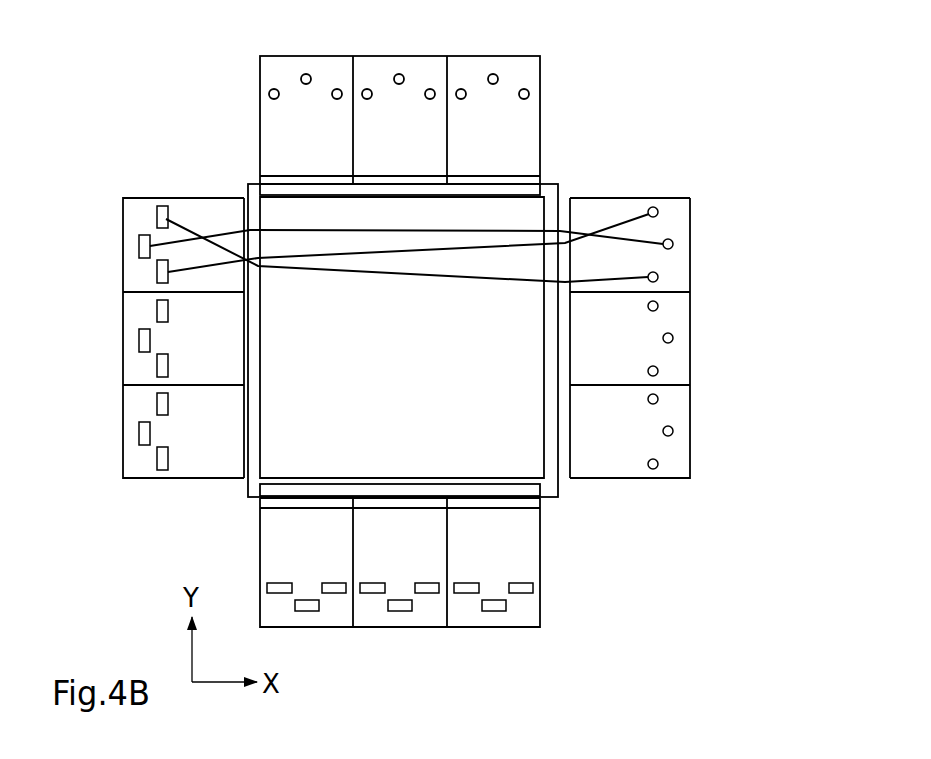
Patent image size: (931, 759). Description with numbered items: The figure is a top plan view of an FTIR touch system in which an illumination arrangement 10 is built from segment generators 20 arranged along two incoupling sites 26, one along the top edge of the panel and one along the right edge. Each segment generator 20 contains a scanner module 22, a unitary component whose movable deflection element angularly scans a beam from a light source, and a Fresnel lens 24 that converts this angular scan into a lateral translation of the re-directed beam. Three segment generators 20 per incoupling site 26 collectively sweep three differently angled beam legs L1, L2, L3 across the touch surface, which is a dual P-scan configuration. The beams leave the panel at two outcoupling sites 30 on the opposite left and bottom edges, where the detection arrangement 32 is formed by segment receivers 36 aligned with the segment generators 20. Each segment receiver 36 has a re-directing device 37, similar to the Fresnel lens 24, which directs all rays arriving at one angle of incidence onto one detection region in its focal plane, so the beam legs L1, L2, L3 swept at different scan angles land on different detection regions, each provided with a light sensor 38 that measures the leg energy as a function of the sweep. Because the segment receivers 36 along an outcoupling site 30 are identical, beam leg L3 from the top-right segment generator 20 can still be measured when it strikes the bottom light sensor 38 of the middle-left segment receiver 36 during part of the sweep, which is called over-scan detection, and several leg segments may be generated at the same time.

The illumination arrangement 10 is at (678, 155).
The segment generator 20 is at (467, 264).
The scanner module 22 is at (658, 463).
The Fresnel lens 24 is at (302, 180).
The incoupling site 26 is at (533, 188).
The outcoupling site 30 is at (253, 205).
The detection arrangement 32 is at (334, 421).
The segment receiver 36 is at (334, 421).
The re-directing device 37 is at (245, 212).
The light sensor 38 is at (160, 407).
The beam leg L1 is at (432, 229).
The beam leg L2 is at (417, 277).
The beam leg L3 is at (495, 252).